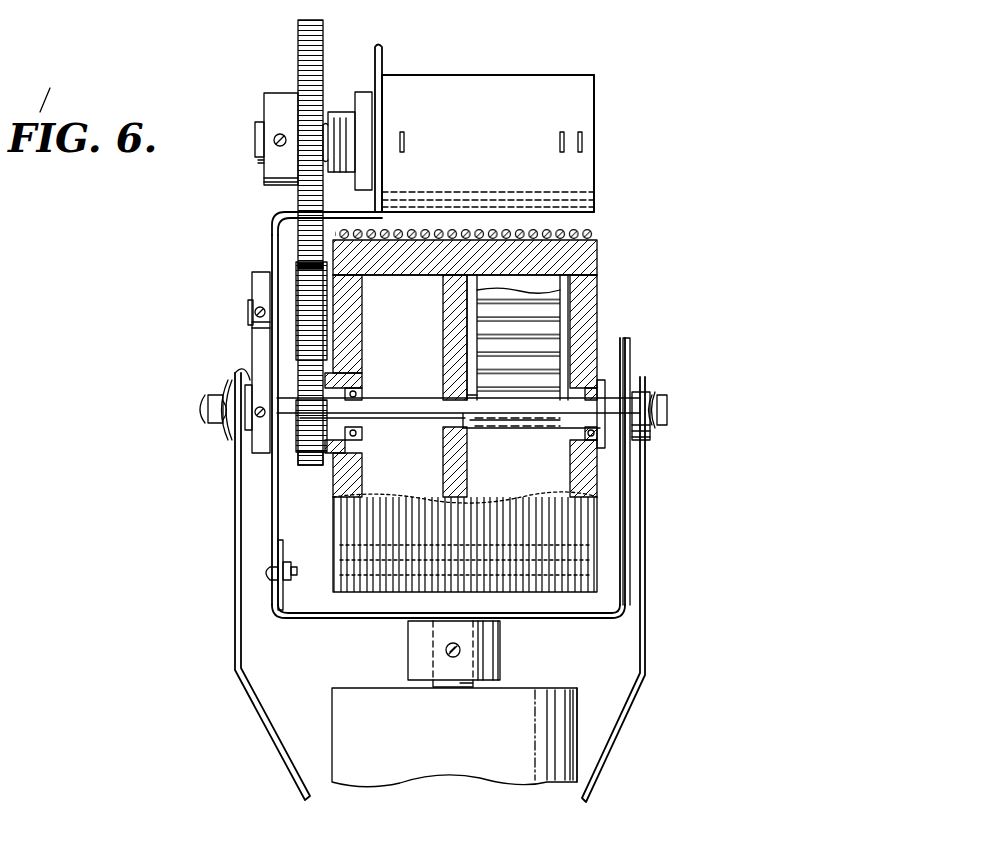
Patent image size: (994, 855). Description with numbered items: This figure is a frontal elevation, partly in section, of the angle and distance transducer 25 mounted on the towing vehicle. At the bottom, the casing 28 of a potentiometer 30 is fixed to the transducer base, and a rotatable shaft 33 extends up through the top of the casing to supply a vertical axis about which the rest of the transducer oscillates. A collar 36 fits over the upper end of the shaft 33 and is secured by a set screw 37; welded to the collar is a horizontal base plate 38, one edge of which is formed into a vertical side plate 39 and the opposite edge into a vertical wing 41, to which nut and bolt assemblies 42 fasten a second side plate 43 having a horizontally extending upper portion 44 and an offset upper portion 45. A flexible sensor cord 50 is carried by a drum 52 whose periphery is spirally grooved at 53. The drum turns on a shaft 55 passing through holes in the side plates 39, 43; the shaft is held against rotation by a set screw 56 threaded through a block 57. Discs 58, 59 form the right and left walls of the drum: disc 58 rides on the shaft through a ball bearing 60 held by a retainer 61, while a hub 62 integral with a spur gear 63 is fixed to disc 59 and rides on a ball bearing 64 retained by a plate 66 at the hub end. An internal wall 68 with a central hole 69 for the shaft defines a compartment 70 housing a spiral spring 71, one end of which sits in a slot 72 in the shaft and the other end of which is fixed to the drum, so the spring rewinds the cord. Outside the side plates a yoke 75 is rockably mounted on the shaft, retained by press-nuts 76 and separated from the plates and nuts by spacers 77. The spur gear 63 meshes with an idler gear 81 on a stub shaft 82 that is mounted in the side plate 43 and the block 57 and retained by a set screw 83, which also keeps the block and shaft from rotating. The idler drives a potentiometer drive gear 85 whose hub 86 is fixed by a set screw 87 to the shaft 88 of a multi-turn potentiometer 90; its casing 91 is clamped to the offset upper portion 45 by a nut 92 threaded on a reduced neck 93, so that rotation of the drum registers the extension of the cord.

The angle and distance transducer 25 is at (693, 214).
The casing 28 is at (352, 705).
The potentiometer 30 is at (612, 660).
The rotatable shaft 33 is at (433, 672).
The collar 36 is at (482, 646).
The set screw 37 is at (448, 645).
The horizontal base plate 38 is at (348, 618).
The vertical side plate 39 is at (626, 545).
The vertical wing 41 is at (284, 556).
The nut and bolt assemblies 42 is at (286, 585).
The second side plate 43 is at (272, 484).
The horizontally extending upper portion 44 is at (276, 212).
The offset upper portion 45 is at (383, 62).
The flexible cord 50 is at (565, 228).
The drum 52 is at (595, 260).
The spiral groove 53 is at (595, 240).
The shaft 55 is at (458, 413).
The set screw 56 is at (258, 420).
The block 57 is at (256, 280).
The disc 58 is at (600, 298).
The disc 59 is at (355, 297).
The ball bearing 60 is at (600, 470).
The retainer plate 61 is at (605, 440).
The hub 62 is at (345, 373).
The spur gear 63 is at (312, 458).
The ball bearing 64 is at (348, 458).
The plate 66 is at (362, 434).
The internal wall 68 is at (450, 350).
The central hole 69 is at (445, 400).
The compartment 70 is at (470, 318).
The spiral spring 71 is at (548, 330).
The slot 72 is at (627, 400).
The yoke 75 is at (645, 656).
The press-nuts 76 is at (207, 418).
The spacers 77 is at (232, 378).
The idler gear 81 is at (298, 266).
The stub shaft 82 is at (248, 308).
The set screw 83 is at (258, 318).
The potentiometer drive gear 85 is at (298, 42).
The hub 86 is at (277, 93).
The set screw 87 is at (280, 134).
The shaft 88 is at (256, 150).
The multi-turn potentiometer 90 is at (609, 65).
The casing 91 is at (497, 82).
The nut 92 is at (365, 92).
The reduced neck 93 is at (343, 112).